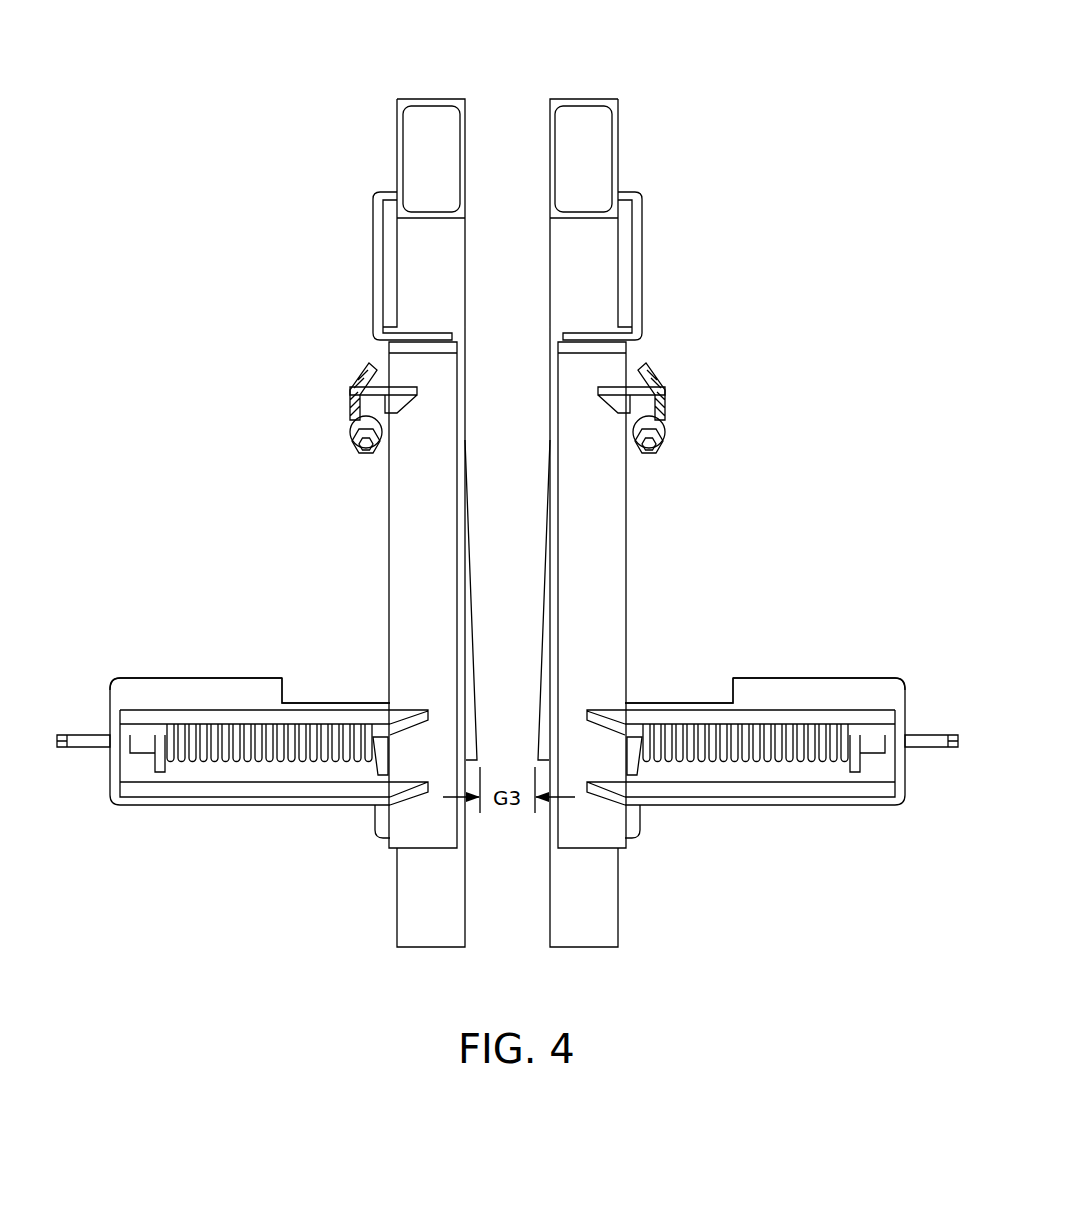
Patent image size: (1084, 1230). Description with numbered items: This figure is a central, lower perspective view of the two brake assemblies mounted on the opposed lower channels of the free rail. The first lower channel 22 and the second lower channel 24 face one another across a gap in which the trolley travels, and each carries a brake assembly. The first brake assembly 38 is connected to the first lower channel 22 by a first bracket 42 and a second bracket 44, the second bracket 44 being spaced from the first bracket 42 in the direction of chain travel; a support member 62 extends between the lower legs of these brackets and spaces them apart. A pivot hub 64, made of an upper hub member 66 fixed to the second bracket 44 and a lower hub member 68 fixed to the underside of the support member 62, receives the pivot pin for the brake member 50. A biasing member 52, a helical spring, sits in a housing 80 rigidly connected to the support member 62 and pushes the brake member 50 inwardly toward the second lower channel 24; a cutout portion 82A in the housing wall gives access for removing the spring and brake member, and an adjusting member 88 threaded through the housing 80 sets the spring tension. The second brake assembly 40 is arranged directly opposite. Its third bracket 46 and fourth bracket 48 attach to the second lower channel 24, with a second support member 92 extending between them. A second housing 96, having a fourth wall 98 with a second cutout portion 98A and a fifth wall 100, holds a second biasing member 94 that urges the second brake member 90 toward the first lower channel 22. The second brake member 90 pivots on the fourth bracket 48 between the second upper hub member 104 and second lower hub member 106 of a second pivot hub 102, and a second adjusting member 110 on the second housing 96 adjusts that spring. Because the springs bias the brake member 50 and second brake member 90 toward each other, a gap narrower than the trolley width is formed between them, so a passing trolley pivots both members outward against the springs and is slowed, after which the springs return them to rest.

The first lower channel 22 is at (577, 96).
The second lower channel 24 is at (436, 96).
The first brake assembly 38 is at (678, 548).
The second brake assembly 40 is at (338, 548).
The first bracket 42 is at (645, 837).
The second bracket 44 is at (646, 250).
The third bracket 46 is at (375, 837).
The fourth bracket 48 is at (370, 250).
The brake member 50 is at (652, 595).
The biasing member 52 is at (760, 767).
The support member 62 is at (630, 514).
The pivot hub 64 is at (661, 370).
The upper hub member 66 is at (660, 392).
The lower hub member 68 is at (658, 431).
The housing 80 is at (772, 759).
The cutout portion 82A is at (697, 700).
The adjusting member 88 is at (933, 732).
The second brake member 90 is at (364, 595).
The second support member 92 is at (385, 514).
The second biasing member 94 is at (255, 767).
The second housing 96 is at (234, 759).
The fourth wall 98 is at (150, 700).
The second cutout portion 98A is at (318, 700).
The fifth wall 100 is at (305, 782).
The second pivot hub 102 is at (354, 370).
The second upper hub member 104 is at (356, 392).
The second lower hub member 106 is at (358, 431).
The second adjusting member 110 is at (65, 753).